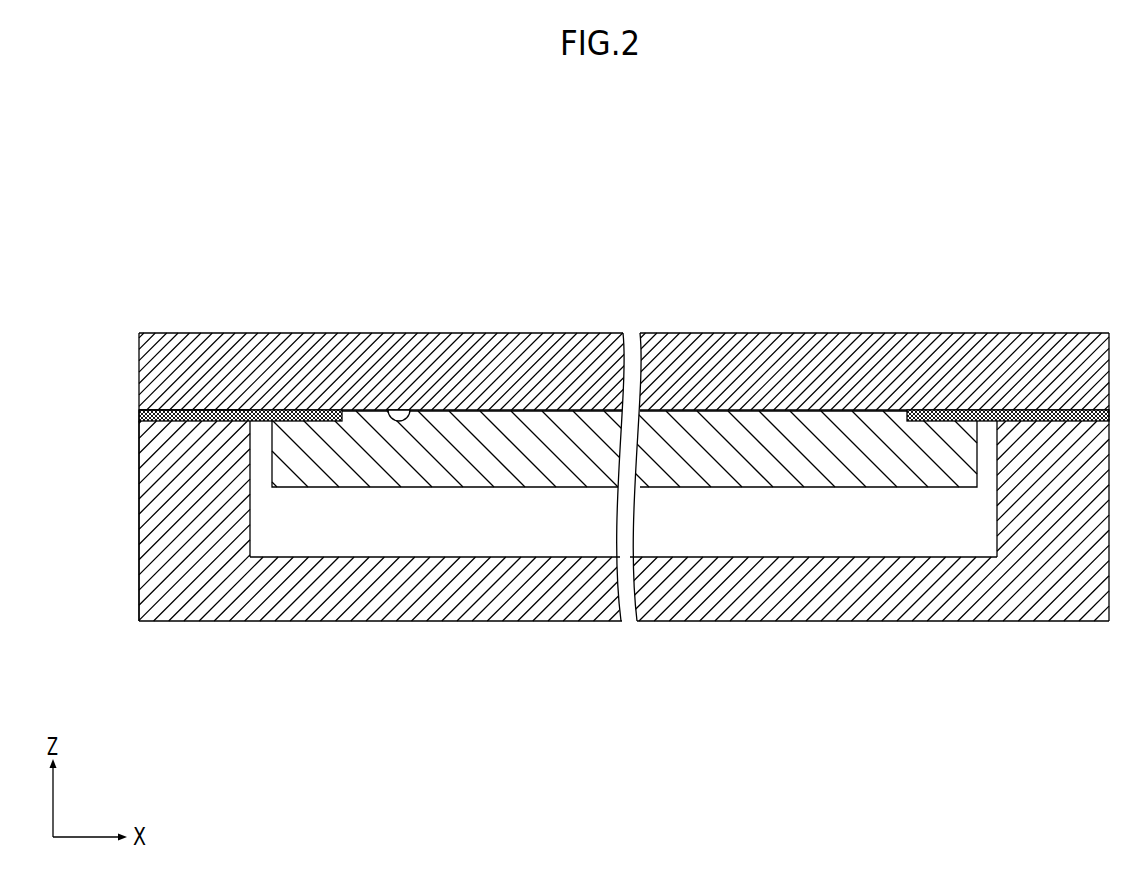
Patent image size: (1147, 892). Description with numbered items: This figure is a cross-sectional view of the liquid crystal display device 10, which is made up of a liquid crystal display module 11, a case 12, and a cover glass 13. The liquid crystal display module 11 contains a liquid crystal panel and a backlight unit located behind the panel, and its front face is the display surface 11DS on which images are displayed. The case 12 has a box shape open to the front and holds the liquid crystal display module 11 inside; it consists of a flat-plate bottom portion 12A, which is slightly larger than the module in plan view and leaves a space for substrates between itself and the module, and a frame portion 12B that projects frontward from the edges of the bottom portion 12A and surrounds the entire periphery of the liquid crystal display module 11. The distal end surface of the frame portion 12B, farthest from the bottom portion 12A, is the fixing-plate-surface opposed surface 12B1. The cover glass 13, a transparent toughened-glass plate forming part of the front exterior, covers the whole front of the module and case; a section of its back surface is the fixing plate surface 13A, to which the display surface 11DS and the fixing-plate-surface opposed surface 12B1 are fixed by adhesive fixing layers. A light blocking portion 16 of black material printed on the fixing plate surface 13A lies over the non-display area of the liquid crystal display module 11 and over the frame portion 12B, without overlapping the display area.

The liquid crystal display device 10 is at (934, 221).
The liquid crystal display module 11 is at (828, 437).
The display surface 11DS is at (740, 410).
The case 12 is at (795, 622).
The bottom portion 12A is at (510, 590).
The frame portion 12B is at (177, 504).
The fixing-plate-surface opposed surface 12B1 is at (172, 410).
The cover glass 13 is at (523, 358).
The fixing plate surface 13A is at (391, 411).
The light blocking portion 16 is at (213, 415).